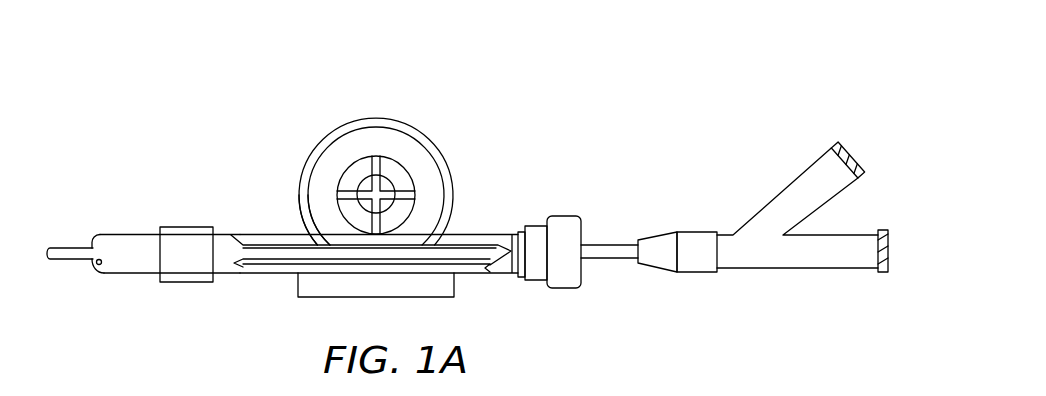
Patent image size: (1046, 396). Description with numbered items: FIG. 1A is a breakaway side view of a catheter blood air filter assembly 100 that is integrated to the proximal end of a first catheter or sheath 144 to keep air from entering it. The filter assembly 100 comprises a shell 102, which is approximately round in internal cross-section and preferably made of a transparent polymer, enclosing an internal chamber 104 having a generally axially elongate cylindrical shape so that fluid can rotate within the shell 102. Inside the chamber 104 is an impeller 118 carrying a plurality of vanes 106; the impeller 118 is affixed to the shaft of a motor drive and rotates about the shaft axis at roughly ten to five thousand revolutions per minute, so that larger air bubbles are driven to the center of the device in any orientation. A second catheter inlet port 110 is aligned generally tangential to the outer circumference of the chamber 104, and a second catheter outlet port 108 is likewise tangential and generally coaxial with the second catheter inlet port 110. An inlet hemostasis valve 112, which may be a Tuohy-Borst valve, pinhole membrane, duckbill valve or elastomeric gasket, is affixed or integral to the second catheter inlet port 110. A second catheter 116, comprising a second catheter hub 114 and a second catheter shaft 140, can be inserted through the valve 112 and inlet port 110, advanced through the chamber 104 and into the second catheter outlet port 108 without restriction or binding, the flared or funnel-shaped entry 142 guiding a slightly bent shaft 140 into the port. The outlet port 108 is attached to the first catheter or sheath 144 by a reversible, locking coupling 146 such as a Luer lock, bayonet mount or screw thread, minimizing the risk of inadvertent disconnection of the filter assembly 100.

The catheter blood air filter assembly 100 is at (170, 72).
The shell 102 is at (425, 133).
The internal chamber 104 is at (373, 145).
The vanes 106 is at (356, 185).
The second catheter outlet port 108 is at (265, 237).
The second catheter inlet port 110 is at (472, 238).
The inlet hemostasis valve 112 is at (565, 268).
The second catheter hub 114 is at (807, 192).
The second catheter 116 is at (603, 252).
The impeller 118 is at (402, 180).
The second catheter shaft 140 is at (60, 257).
The entry to the second catheter outlet port 142 is at (297, 207).
The first catheter or sheath 144 is at (132, 240).
The reversible coupling 146 is at (185, 257).